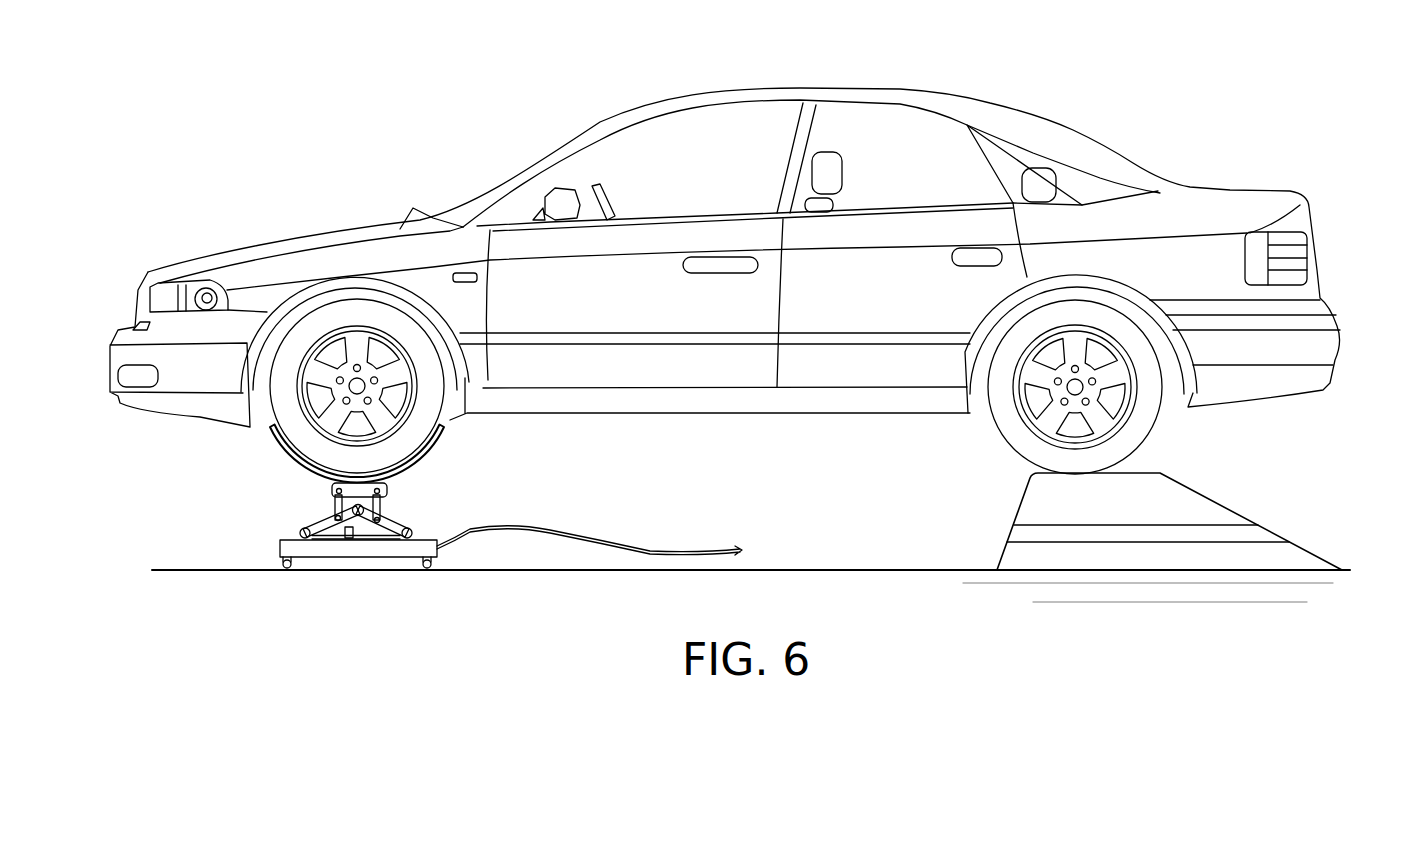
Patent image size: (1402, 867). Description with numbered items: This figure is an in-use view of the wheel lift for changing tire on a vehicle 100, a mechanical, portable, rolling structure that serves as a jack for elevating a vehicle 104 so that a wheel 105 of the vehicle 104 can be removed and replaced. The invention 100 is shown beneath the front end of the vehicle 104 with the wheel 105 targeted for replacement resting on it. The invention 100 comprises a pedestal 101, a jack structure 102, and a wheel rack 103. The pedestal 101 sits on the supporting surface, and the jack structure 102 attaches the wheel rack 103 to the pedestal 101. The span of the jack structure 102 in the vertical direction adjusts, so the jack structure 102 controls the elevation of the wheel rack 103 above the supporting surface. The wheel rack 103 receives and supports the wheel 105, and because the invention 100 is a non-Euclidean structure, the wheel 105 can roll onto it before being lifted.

The wheel lift for changing tire on a vehicle 100 is at (242, 545).
The pedestal 101 is at (363, 558).
The jack structure 102 is at (395, 518).
The wheel rack 103 is at (436, 458).
The vehicle 104 is at (1123, 147).
The wheel 105 is at (357, 326).